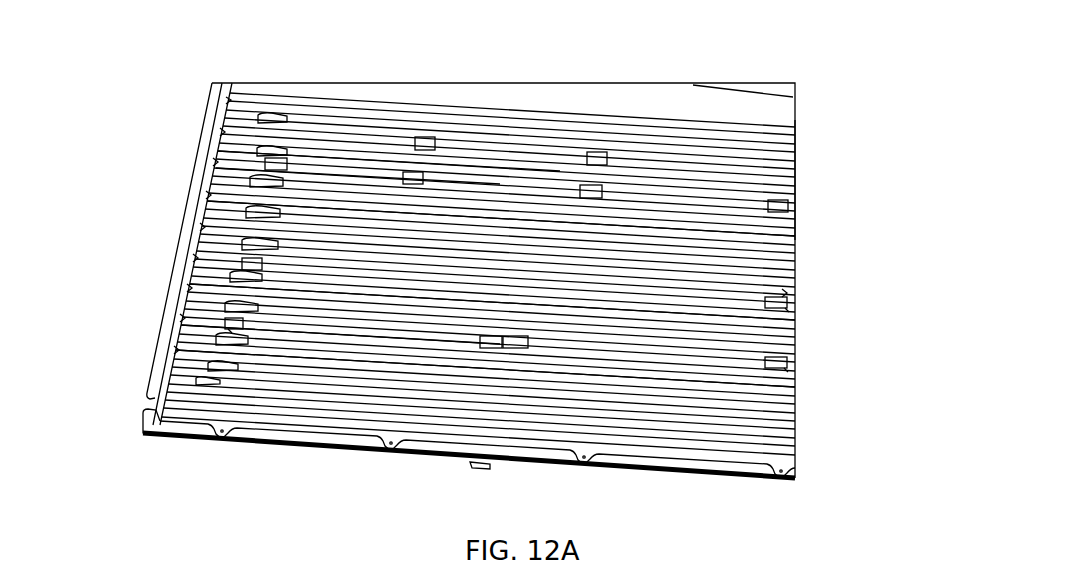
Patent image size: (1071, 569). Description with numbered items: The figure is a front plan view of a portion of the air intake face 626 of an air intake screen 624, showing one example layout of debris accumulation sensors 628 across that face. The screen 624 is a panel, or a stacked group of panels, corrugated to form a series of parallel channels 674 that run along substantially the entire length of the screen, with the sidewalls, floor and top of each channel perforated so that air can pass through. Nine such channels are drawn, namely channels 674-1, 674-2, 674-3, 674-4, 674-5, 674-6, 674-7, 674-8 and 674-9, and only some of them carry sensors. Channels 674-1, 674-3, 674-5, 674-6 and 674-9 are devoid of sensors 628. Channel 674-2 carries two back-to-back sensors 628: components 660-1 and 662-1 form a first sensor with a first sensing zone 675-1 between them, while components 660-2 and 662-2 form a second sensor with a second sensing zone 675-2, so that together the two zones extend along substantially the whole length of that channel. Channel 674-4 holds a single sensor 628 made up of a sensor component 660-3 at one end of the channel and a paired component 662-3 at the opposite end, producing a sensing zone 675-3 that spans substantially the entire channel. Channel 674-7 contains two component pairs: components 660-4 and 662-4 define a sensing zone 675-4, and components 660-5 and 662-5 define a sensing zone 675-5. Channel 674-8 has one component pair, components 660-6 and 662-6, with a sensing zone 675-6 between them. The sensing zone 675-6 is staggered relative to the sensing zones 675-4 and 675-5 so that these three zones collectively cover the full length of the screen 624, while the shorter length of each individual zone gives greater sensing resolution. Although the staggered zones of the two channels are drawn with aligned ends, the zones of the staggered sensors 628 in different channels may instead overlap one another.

The air intake screen 624 is at (797, 130).
The air intake face 626 is at (805, 174).
The debris accumulation sensor 628 is at (230, 330).
The sensor component 660-1 is at (490, 348).
The sensor component 660-2 is at (517, 348).
The sensor component 660-3 is at (242, 263).
The sensor component 660-4 is at (280, 158).
The sensor component 660-5 is at (603, 188).
The sensor component 660-6 is at (435, 140).
The sensor component 662-1 is at (237, 329).
The sensor component 662-2 is at (772, 368).
The paired component 662-3 is at (787, 302).
The sensor component 662-4 is at (413, 172).
The sensor component 662-5 is at (788, 205).
The sensor component 662-6 is at (597, 152).
The channel 674 is at (782, 295).
The channel 674-1 is at (174, 350).
The channel 674-2 is at (180, 318).
The channel 674-3 is at (187, 288).
The channel 674-4 is at (193, 258).
The channel 674-5 is at (200, 227).
The channel 674-6 is at (206, 195).
The channel 674-7 is at (213, 162).
The channel 674-8 is at (220, 132).
The channel 674-9 is at (226, 100).
The sensing zone 675-1 is at (388, 343).
The sensing zone 675-2 is at (665, 363).
The sensing zone 675-3 is at (712, 297).
The sensing zone 675-4 is at (357, 172).
The sensing zone 675-5 is at (713, 208).
The sensing zone 675-6 is at (528, 157).